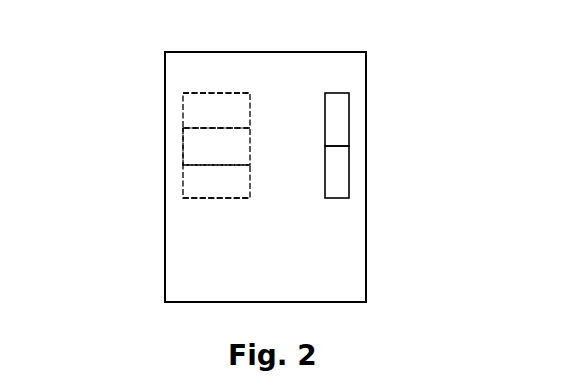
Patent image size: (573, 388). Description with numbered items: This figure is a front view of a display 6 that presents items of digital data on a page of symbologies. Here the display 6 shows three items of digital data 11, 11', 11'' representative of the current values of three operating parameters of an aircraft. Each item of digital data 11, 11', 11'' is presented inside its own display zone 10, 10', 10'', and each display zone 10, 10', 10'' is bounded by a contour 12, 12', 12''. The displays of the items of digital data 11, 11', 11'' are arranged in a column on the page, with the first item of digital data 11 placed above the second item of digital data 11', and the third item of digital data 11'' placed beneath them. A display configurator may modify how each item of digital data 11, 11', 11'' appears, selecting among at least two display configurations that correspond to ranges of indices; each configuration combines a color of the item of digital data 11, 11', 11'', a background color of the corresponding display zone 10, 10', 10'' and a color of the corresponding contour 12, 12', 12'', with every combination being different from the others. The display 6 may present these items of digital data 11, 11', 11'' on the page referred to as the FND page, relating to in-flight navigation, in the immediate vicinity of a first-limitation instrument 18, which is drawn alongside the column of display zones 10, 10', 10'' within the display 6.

The display 6 is at (357, 108).
The first-limitation instrument 18 is at (350, 173).
The display zone 10 is at (173, 96).
The display zone 10' is at (158, 132).
The display zone 10'' is at (169, 202).
The item of digital data 11 is at (255, 95).
The item of digital data 11' is at (259, 138).
The item of digital data 11'' is at (258, 193).
The contour 12 is at (172, 56).
The contour 12' is at (125, 165).
The contour 12'' is at (237, 227).